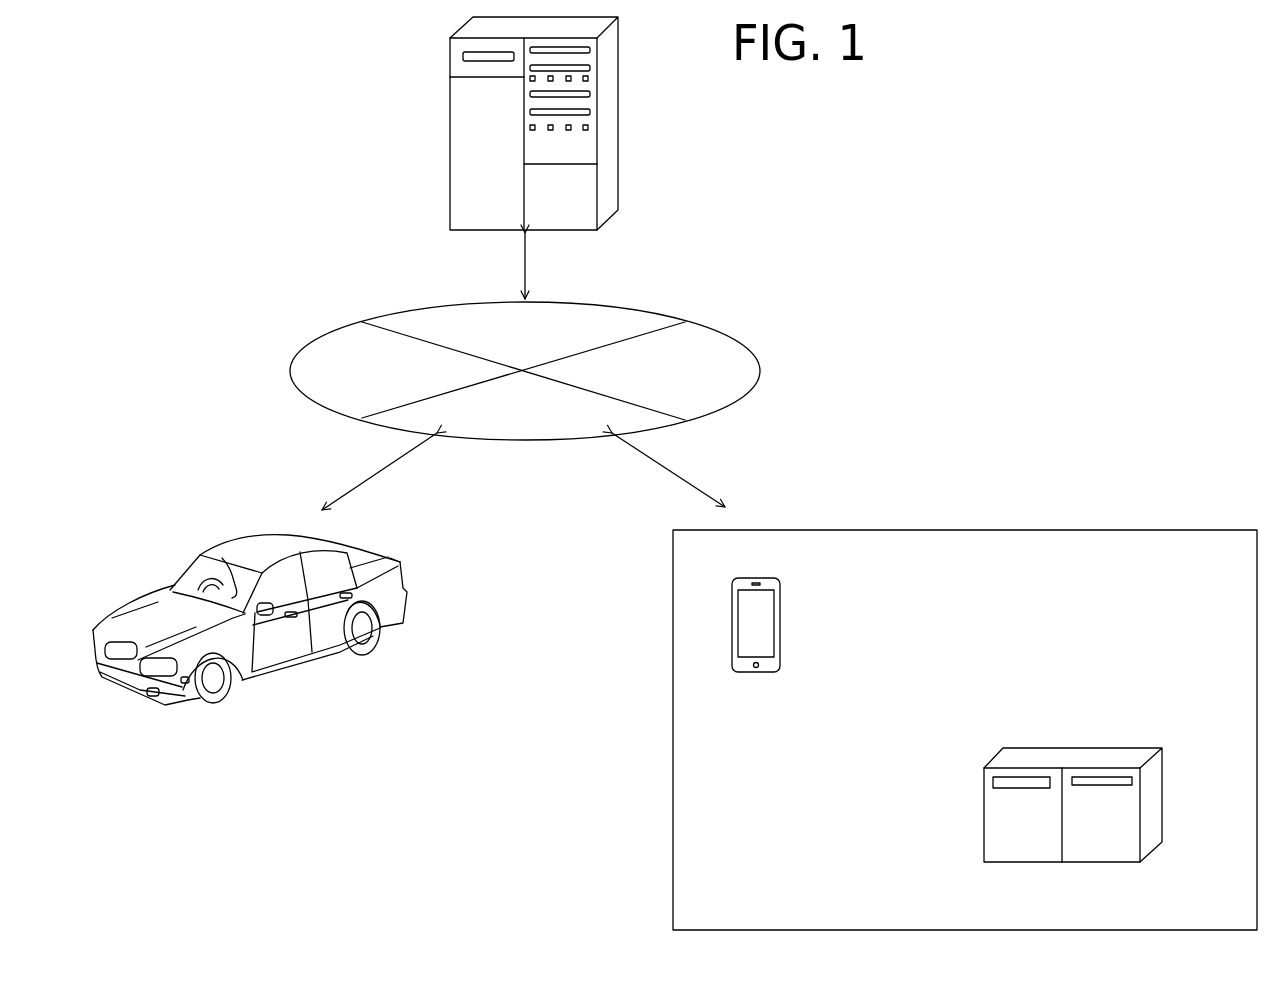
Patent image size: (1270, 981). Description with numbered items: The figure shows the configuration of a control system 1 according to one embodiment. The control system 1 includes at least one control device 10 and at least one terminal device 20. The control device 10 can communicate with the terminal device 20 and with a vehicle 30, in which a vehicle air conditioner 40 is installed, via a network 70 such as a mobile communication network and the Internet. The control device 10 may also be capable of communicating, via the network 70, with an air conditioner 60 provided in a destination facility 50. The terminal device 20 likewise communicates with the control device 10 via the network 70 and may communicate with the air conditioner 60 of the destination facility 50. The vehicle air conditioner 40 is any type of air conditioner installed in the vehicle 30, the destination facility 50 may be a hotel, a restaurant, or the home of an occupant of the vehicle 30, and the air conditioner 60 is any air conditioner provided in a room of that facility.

The control system 1 is at (1072, 217).
The control device 10 is at (452, 123).
The terminal device 20 is at (781, 620).
The vehicle 30 is at (142, 597).
The vehicle air conditioner 40 is at (220, 562).
The destination facility 50 is at (988, 530).
The air conditioner 60 is at (1077, 748).
The network 70 is at (290, 366).